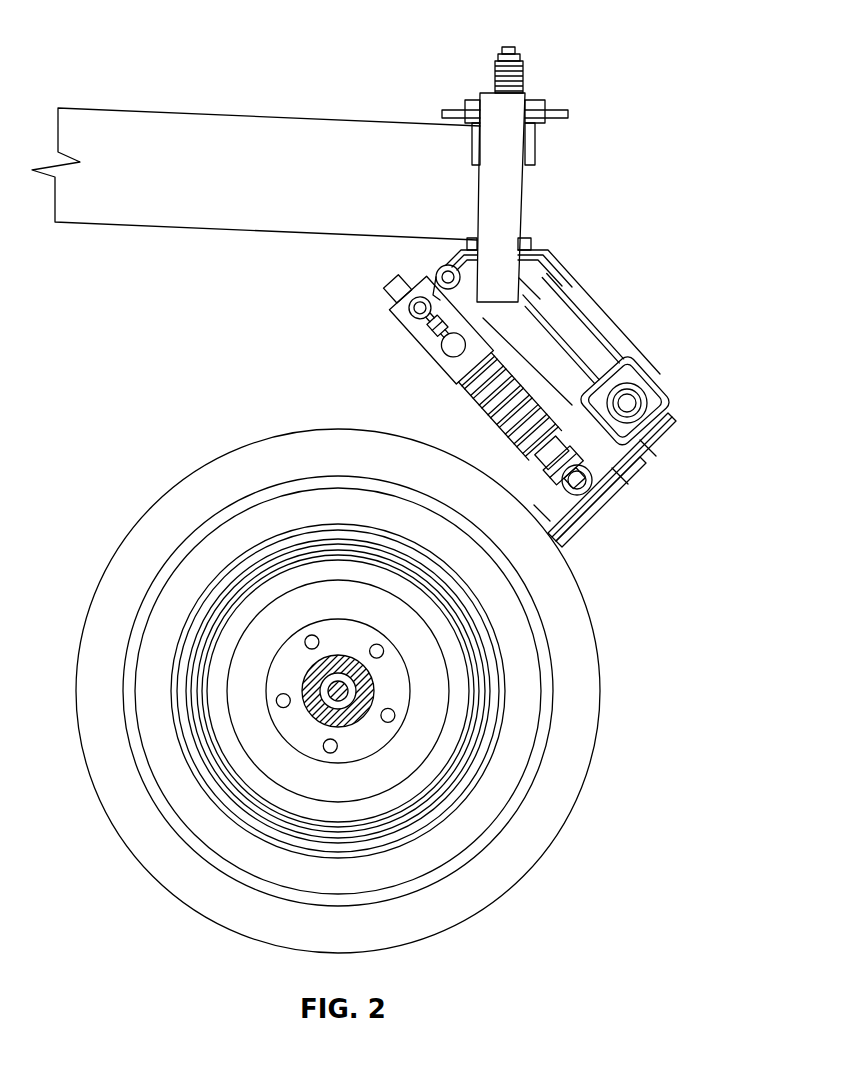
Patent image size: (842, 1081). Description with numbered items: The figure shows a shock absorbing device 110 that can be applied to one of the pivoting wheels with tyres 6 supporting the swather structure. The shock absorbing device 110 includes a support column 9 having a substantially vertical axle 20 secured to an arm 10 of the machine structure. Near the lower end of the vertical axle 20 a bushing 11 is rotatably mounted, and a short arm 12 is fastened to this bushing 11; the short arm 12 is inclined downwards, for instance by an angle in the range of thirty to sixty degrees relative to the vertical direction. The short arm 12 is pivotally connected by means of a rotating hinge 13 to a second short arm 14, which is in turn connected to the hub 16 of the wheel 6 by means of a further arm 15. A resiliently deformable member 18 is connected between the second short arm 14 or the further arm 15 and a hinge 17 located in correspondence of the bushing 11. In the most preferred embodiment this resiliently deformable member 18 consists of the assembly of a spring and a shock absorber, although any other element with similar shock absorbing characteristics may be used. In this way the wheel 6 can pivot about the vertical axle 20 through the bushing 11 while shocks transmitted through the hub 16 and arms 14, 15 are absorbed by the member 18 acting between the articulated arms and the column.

The shock absorbing device 110 is at (611, 39).
The arm 10 is at (252, 133).
The support column 9 is at (537, 153).
The vertical axle 20 is at (524, 217).
The bushing 11 is at (531, 279).
The hinge 17 is at (440, 274).
The short arm 12 is at (598, 353).
The resiliently deformable member 18 is at (440, 358).
The rotating hinge 13 is at (670, 420).
The second short arm 14 is at (600, 493).
The further arm 15 is at (556, 535).
The wheel with tyre 6 is at (598, 655).
The hub 16 is at (340, 690).